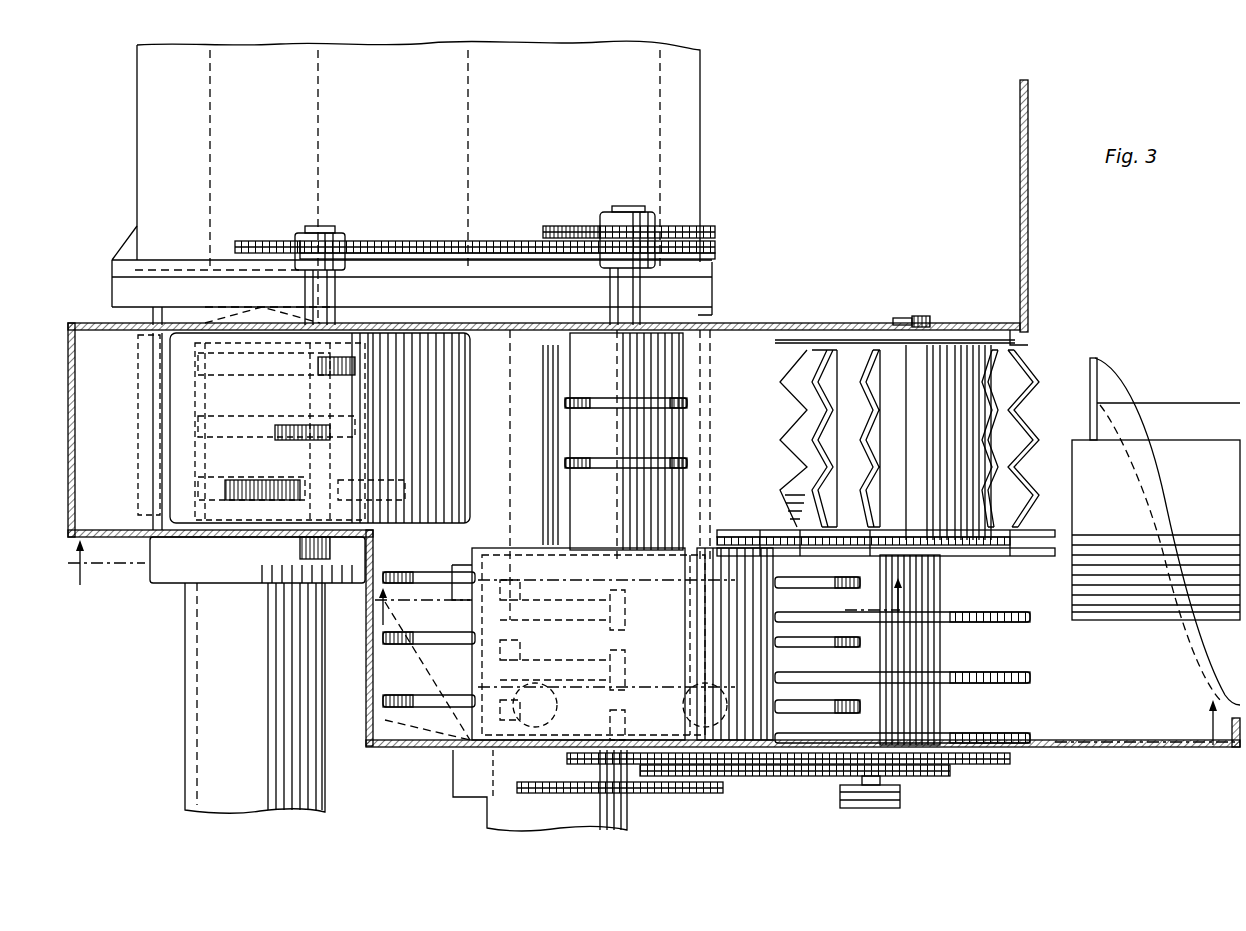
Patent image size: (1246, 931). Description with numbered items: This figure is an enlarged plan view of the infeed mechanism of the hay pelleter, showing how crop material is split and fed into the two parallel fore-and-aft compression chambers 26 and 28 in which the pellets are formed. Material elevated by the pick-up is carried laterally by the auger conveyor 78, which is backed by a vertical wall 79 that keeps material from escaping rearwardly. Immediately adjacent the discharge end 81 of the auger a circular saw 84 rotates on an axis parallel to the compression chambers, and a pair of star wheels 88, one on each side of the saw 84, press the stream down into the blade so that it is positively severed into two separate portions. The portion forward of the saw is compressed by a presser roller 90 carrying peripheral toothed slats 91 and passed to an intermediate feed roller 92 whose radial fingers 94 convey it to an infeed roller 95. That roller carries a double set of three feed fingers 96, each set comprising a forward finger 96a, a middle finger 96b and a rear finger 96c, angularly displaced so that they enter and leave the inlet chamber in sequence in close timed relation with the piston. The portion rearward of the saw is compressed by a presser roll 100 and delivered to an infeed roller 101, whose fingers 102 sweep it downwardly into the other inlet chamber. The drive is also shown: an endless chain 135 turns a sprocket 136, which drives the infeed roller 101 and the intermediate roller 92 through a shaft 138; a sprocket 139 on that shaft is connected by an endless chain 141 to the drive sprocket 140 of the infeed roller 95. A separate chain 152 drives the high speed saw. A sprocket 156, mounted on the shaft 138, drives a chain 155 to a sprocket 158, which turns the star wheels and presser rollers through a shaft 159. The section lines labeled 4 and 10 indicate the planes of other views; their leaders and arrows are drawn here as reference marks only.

The drive sprocket 140 is at (258, 244).
The endless chain 141 is at (410, 243).
The endless chain 135 is at (548, 228).
The sprocket 136 is at (716, 231).
The sprocket 139 is at (716, 256).
The shaft 138 is at (644, 305).
The shaft 159 is at (928, 326).
The presser roller 90 is at (890, 352).
The toothed slats 91 is at (877, 440).
The feed fingers 96 is at (300, 420).
The forward finger 96a is at (345, 352).
The middle finger 96b is at (290, 440).
The rear finger 96c is at (243, 484).
The infeed roller 95 is at (466, 462).
The radial fingers 94 is at (594, 428).
The intermediate feed roller 92 is at (683, 438).
The auger conveyor 78 is at (1203, 447).
The circular saw 84 is at (1015, 541).
The star wheels 88 is at (1045, 558).
The fingers 102 is at (820, 586).
The infeed roller 101 is at (666, 646).
The presser roll 100 is at (1012, 674).
The discharge end 81 is at (1095, 622).
The compression chamber 26 is at (326, 783).
The compression chamber 28 is at (487, 814).
The sprocket 156 is at (572, 770).
The chain 155 is at (786, 766).
The sprocket 158 is at (952, 770).
The chain 152 is at (902, 793).
The vertical wall 79 is at (1152, 750).
The section line 4- 4 is at (654, 642).
The section line 10- 10 is at (641, 593).